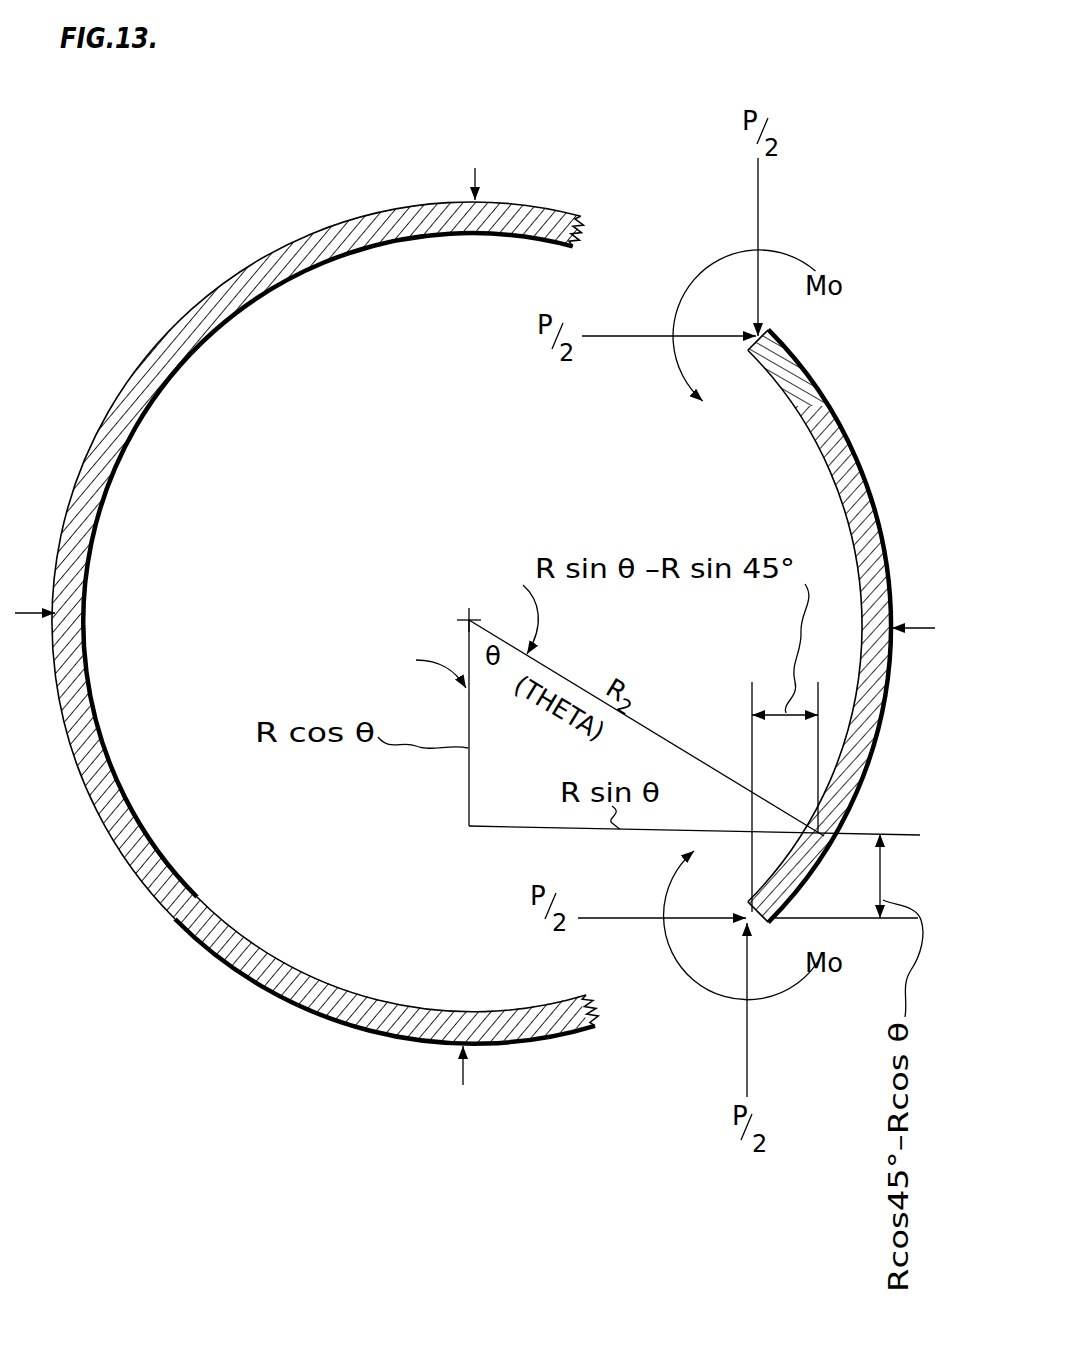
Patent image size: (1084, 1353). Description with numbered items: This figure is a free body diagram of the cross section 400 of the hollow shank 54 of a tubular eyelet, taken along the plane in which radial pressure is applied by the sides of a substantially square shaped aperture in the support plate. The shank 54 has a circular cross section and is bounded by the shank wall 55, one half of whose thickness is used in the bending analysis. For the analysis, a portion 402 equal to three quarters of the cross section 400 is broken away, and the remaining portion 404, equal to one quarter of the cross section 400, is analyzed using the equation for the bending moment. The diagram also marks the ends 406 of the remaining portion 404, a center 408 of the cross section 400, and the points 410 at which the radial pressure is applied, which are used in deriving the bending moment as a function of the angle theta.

The cross section 400 is at (92, 265).
The portion 402 is at (214, 290).
The remaining portion 404 is at (805, 650).
The segment end 406 is at (767, 326).
The ring center 408 is at (469, 620).
The load application point 410 is at (468, 199).
The hollow shank 54 is at (876, 433).
The shank wall 55 is at (825, 463).